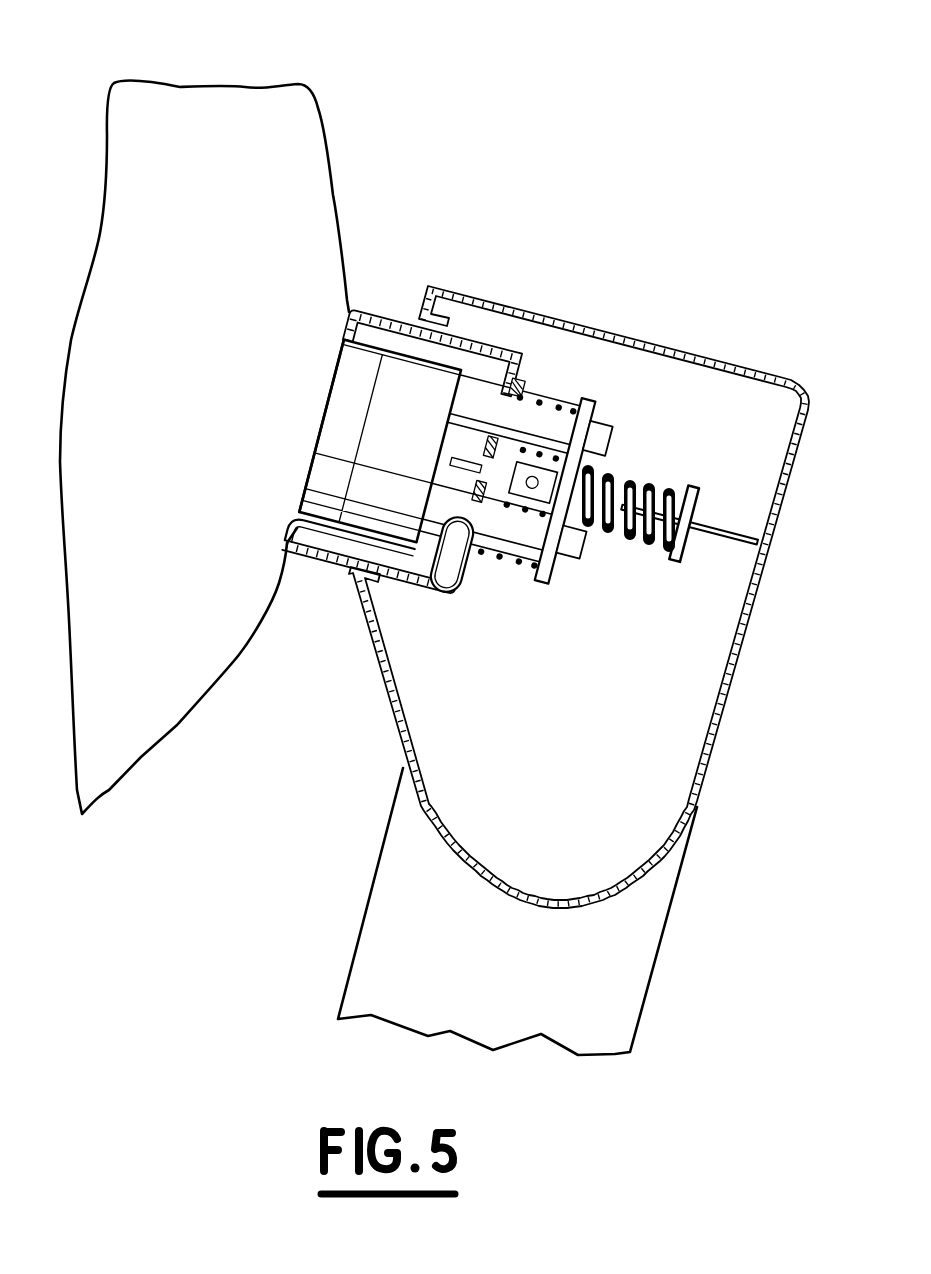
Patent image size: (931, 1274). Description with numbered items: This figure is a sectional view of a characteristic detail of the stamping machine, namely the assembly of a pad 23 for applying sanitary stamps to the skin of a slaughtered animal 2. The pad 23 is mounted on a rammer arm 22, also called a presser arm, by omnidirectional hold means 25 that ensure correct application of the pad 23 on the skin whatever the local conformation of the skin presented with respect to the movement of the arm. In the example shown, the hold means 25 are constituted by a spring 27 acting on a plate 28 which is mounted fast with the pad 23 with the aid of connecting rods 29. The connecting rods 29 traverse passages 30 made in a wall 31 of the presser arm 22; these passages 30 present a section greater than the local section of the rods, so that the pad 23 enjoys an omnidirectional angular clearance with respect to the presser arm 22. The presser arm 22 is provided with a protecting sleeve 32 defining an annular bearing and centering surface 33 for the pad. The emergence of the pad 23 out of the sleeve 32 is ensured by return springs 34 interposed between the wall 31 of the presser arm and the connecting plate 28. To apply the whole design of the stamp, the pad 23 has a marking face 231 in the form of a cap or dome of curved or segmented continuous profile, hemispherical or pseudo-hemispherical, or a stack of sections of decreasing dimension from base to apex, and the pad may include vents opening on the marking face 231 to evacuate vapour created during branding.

The slaughtered animal 2 is at (235, 103).
The rammer arm 22 is at (630, 983).
The pad 23 is at (358, 368).
The marking face 231 is at (345, 325).
The omnidirectional hold means 25 is at (596, 383).
The spring 27 is at (632, 533).
The plate 28 is at (592, 406).
The connecting rods 29 is at (527, 415).
The passages 30 is at (438, 556).
The wall 31 is at (472, 584).
The protecting sleeve 32 is at (327, 559).
The annular bearing and centering surface 33 is at (296, 528).
The return springs 34 is at (562, 400).